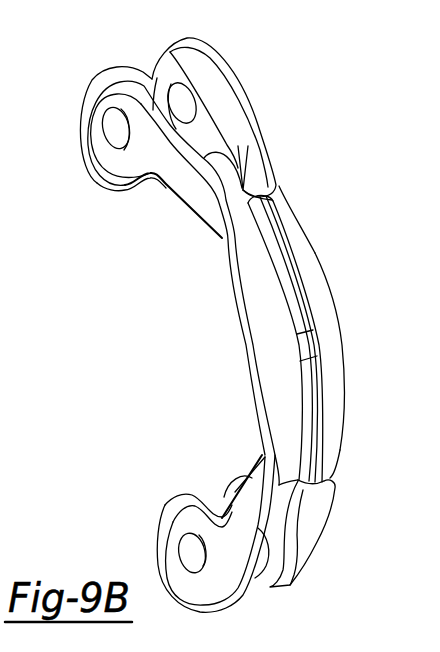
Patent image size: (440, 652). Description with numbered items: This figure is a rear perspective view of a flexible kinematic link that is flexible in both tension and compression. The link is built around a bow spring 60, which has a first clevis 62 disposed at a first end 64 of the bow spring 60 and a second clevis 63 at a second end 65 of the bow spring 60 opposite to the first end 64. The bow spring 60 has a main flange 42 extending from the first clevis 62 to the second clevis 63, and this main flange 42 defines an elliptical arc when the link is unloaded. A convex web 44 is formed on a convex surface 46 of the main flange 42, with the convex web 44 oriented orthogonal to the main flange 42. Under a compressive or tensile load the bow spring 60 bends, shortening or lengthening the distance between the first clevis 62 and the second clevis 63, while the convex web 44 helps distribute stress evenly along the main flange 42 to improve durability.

The main flange 42 is at (336, 305).
The convex web 44 is at (283, 243).
The convex surface 46 is at (339, 346).
The bow spring 60 is at (325, 266).
The first clevis 62 is at (237, 104).
The second clevis 63 is at (306, 554).
The first end 64 is at (272, 184).
The second end 65 is at (329, 484).